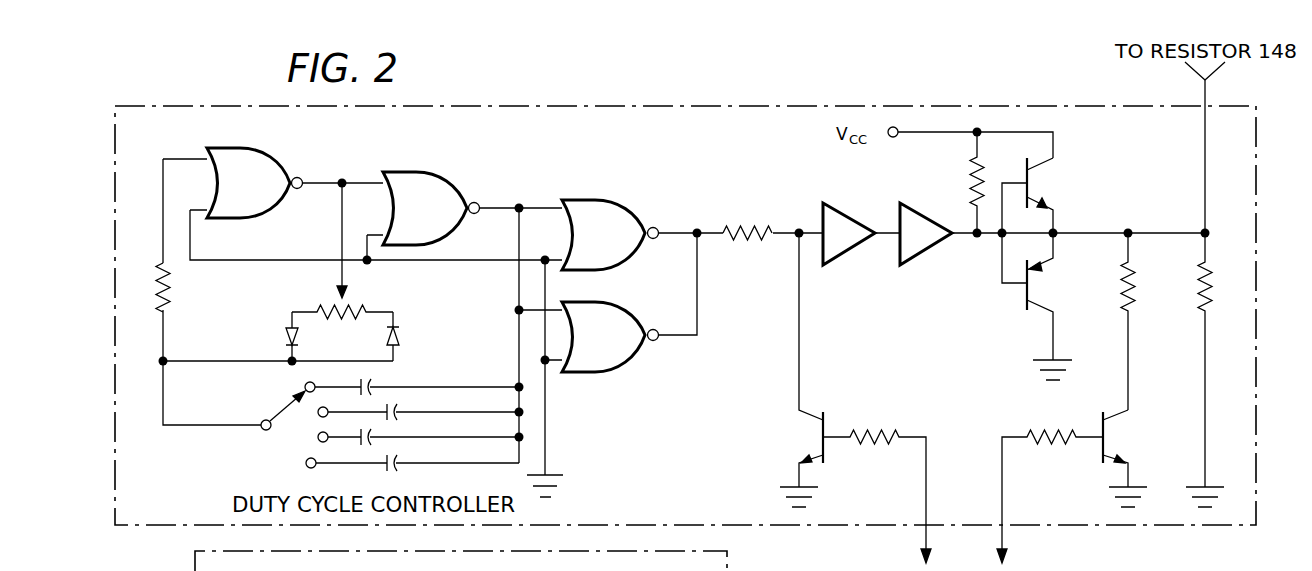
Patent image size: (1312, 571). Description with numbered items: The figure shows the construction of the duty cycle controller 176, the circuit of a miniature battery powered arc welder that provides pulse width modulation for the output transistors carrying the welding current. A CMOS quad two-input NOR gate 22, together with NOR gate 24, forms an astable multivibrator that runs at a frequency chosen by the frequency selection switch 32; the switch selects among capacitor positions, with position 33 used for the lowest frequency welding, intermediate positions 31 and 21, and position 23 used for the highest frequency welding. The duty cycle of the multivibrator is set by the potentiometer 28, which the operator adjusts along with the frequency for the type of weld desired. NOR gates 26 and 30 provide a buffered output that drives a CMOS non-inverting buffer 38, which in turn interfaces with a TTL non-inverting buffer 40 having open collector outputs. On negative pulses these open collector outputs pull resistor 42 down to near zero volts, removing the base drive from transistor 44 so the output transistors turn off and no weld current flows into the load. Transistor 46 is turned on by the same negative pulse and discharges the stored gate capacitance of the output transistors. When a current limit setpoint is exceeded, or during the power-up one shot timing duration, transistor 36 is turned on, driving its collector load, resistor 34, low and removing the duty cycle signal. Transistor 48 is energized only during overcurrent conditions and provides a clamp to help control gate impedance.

The duty cycle controller 176 is at (840, 106).
The nor gate 22 is at (266, 153).
The nor gate 24 is at (444, 180).
The nor gate 26 is at (616, 200).
The nor gate 30 is at (603, 372).
The potentiometer 28 is at (362, 303).
The frequency selection switch 32 is at (282, 408).
The position 33 is at (374, 388).
The capacitor 31 is at (400, 412).
The capacitor 21 is at (376, 432).
The position 23 is at (400, 468).
The resistor 34 is at (752, 225).
The transistor 36 is at (814, 432).
The cmos non-inverting buffer 38 is at (850, 254).
The ttl non-inverting buffer 40 is at (928, 253).
The resistor 42 is at (966, 183).
The transistor 44 is at (1035, 184).
The transistor 46 is at (1035, 286).
The transistor 48 is at (1108, 437).